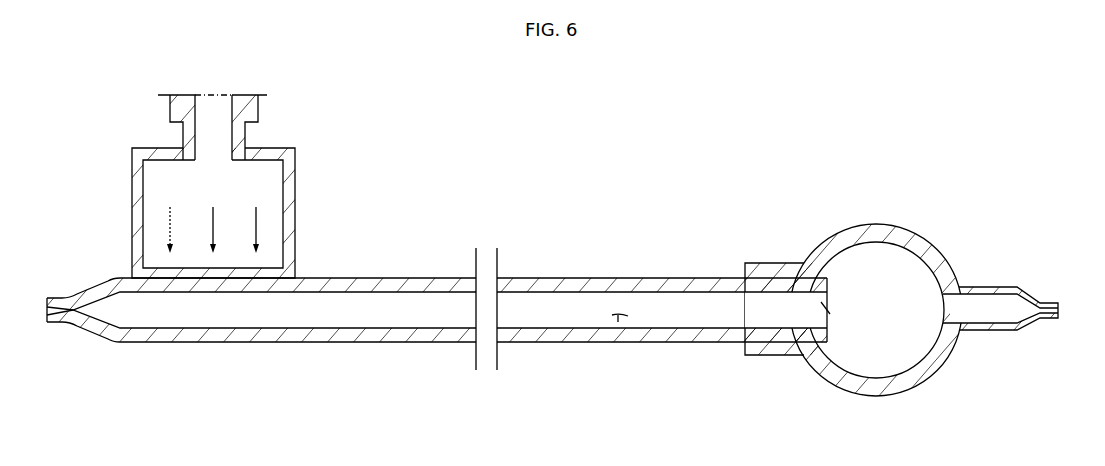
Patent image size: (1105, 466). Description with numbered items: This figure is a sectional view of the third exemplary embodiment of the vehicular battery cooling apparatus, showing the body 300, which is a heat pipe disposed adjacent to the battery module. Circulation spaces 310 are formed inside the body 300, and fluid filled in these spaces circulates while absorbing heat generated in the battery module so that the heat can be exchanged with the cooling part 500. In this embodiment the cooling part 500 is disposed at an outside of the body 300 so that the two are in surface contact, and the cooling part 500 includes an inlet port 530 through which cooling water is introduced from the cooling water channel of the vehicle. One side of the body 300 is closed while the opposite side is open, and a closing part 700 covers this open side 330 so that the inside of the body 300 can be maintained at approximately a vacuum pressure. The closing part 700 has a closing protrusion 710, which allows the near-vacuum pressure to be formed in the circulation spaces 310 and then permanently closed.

The body 300 is at (577, 285).
The circulation space 310 is at (618, 322).
The open side 330 is at (825, 311).
The cooling part 500 is at (132, 219).
The inlet port 530 is at (240, 115).
The closing part 700 is at (948, 243).
The closing protrusion 710 is at (988, 328).